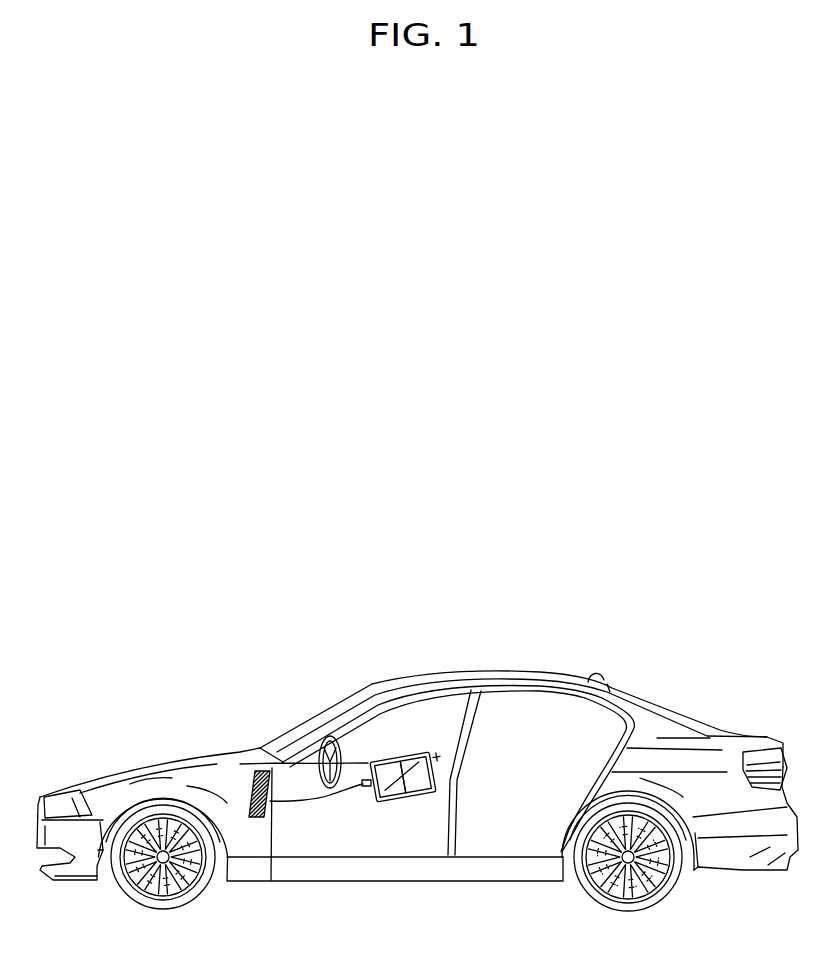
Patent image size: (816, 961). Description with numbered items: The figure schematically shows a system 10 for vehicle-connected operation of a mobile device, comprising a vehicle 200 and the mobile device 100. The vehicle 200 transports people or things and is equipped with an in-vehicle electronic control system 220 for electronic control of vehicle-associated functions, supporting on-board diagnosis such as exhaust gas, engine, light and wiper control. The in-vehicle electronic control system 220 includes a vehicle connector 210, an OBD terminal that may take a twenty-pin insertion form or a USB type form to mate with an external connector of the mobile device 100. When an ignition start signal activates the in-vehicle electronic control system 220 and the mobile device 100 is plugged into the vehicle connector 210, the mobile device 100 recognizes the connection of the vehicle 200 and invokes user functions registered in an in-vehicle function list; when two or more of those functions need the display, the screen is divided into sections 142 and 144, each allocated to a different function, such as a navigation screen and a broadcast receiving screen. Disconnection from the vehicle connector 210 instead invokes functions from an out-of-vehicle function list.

The system for vehicle-connected operation of a mobile device 10 is at (554, 578).
The vehicle 200 is at (506, 670).
The mobile device 100 is at (394, 748).
The vehicle connector 210 is at (359, 768).
The in-vehicle electronic control system 220 is at (242, 776).
The section 142 is at (399, 777).
The section 144 is at (418, 796).